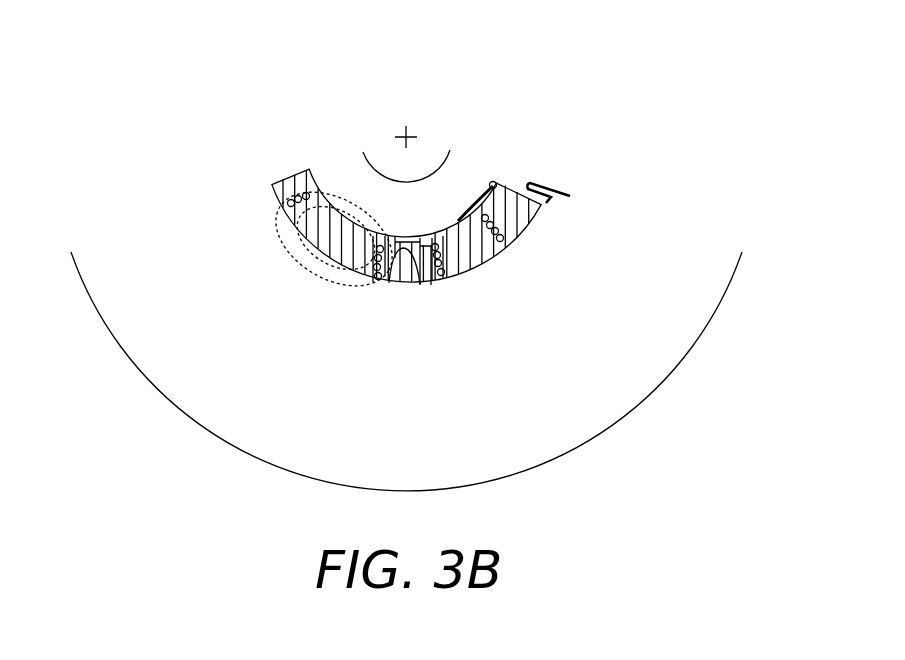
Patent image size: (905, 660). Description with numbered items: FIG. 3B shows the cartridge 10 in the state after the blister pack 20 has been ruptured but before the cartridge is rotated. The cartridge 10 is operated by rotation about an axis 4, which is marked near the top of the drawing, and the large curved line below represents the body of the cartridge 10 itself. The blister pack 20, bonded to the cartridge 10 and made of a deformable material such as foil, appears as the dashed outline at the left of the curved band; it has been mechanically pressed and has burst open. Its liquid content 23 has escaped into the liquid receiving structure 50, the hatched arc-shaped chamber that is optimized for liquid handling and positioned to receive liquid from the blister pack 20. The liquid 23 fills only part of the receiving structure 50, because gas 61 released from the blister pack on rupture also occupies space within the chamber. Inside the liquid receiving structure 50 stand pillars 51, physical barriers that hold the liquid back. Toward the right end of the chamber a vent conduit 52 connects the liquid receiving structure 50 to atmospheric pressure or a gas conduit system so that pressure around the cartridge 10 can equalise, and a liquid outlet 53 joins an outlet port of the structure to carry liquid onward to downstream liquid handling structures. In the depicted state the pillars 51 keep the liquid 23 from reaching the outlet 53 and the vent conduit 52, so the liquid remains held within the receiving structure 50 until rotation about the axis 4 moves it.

The cartridge 10 is at (428, 463).
The axis 4 is at (417, 137).
The liquid receiving structure 50 is at (278, 151).
The liquid content 23 is at (483, 267).
The blister pack 20 is at (273, 289).
The gas 61 is at (395, 272).
The pillars 51 is at (441, 280).
The vent conduit 52 is at (477, 203).
The liquid outlet 53 is at (558, 197).